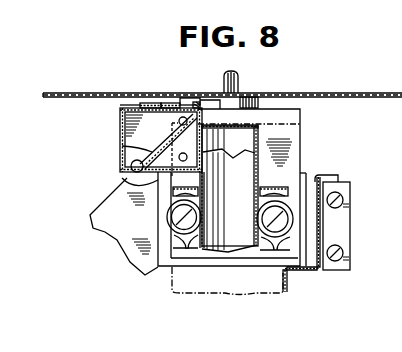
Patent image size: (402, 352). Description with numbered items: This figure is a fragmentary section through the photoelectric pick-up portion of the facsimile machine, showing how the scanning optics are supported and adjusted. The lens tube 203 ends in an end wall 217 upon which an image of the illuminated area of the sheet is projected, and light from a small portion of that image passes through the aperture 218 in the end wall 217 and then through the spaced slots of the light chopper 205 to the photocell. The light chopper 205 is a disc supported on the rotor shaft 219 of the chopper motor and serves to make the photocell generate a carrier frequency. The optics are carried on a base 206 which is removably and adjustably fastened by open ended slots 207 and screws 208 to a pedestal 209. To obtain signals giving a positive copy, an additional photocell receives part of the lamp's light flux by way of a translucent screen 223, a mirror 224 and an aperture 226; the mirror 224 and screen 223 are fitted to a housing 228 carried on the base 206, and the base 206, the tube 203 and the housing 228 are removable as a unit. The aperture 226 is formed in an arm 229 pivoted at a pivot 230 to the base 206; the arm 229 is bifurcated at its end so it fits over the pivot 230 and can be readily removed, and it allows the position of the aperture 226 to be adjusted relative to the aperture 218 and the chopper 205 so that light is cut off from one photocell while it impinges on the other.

The lens tube 203 is at (228, 235).
The light chopper 205 is at (338, 95).
The base 206 is at (292, 165).
The open ended slots 207 is at (182, 248).
The screws 208 is at (170, 215).
The pedestal 209 is at (131, 255).
The end wall 217 is at (242, 130).
The aperture 218 is at (228, 121).
The rotor shaft 219 is at (237, 82).
The translucent screen 223 is at (122, 126).
The mirror 224 is at (122, 148).
The aperture 226 is at (170, 102).
The housing 228 is at (152, 168).
The arm 229 is at (151, 102).
The pivot 230 is at (213, 86).